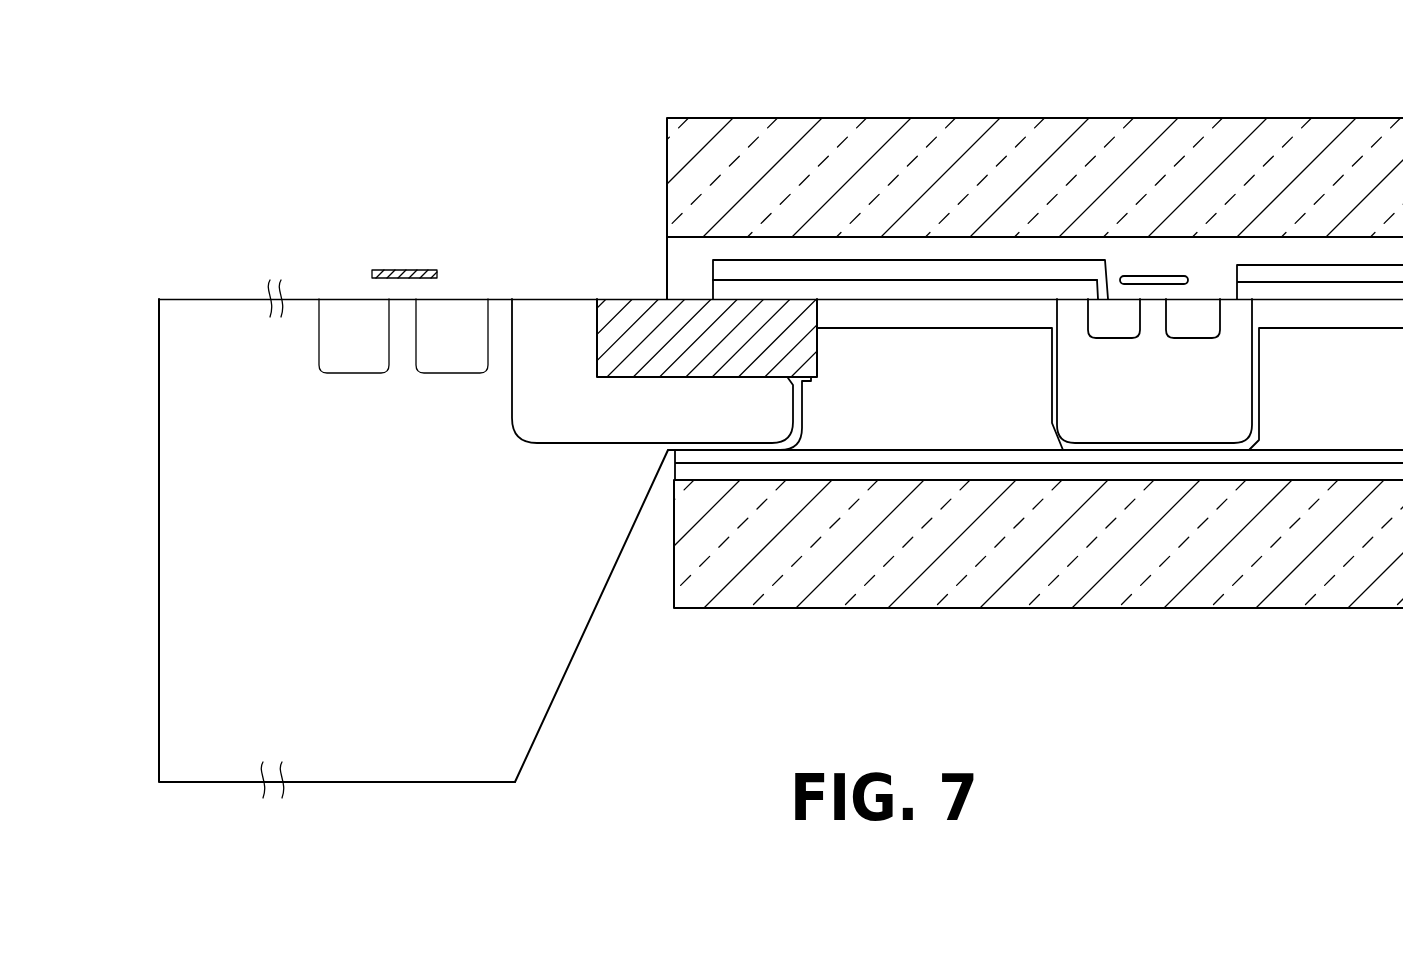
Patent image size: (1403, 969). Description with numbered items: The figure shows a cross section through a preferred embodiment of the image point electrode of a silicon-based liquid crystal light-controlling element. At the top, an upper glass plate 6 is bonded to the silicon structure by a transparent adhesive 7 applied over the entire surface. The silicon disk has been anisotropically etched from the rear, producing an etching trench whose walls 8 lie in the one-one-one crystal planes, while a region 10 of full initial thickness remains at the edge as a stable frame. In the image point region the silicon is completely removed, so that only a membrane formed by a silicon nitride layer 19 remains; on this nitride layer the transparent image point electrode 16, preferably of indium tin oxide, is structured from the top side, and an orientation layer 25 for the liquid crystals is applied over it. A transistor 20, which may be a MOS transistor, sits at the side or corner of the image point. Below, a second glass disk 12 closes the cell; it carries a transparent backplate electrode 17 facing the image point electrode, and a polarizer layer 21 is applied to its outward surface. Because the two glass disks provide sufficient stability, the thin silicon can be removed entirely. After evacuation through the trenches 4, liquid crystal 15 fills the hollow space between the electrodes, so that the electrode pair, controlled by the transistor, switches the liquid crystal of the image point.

The trench 4 is at (590, 323).
The upper glass plate 6 is at (705, 135).
The transparent adhesive 7 is at (1213, 250).
The etching trench wall 8 is at (570, 665).
The full-thickness region 10 is at (207, 600).
The second glass disk 12 is at (1020, 583).
The liquid crystal 15 is at (908, 430).
The transparent image point electrode 16 is at (728, 268).
The transparent backplate electrode 17 is at (1358, 472).
The silicon nitride layer 19 is at (1003, 287).
The transistor 20 is at (1160, 288).
The polarizer layer 21 is at (783, 452).
The orientation layer 25 is at (955, 313).